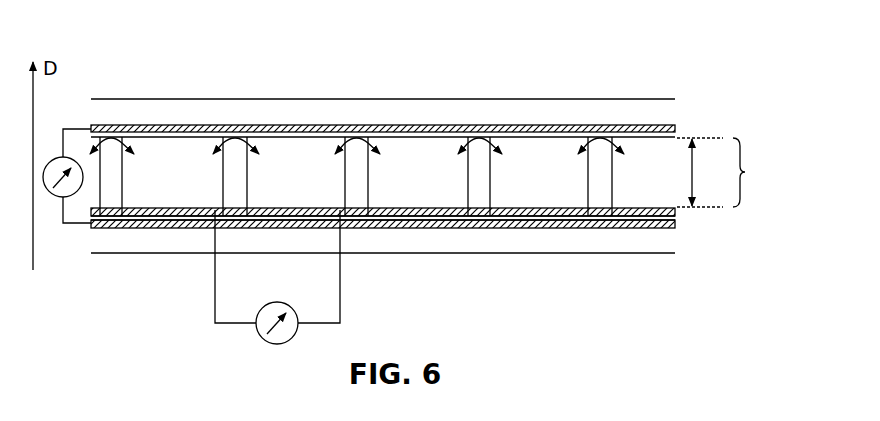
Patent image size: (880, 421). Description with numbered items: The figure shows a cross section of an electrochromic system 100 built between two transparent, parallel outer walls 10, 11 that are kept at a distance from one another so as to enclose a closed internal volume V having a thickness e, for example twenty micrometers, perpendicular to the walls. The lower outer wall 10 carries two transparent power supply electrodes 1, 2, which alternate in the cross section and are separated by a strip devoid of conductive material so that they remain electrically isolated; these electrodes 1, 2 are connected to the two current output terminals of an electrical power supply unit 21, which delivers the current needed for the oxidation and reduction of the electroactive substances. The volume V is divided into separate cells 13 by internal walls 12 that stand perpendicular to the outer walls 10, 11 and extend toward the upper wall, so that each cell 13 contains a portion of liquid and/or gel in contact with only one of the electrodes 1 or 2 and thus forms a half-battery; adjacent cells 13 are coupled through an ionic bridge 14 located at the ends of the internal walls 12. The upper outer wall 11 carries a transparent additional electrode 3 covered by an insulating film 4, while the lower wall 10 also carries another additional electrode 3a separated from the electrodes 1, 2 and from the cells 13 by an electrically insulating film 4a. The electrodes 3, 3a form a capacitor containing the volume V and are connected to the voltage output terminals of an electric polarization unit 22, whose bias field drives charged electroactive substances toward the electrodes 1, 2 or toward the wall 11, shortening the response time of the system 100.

The electrochromic system 100 is at (668, 68).
The outer wall 10 is at (663, 238).
The outer wall 11 is at (668, 115).
The additional electrode 3 is at (170, 127).
The insulating film 4 is at (132, 136).
The other additional electrode 3a is at (100, 226).
The electrically insulating film 4a is at (140, 218).
The transparent electrode 1 is at (173, 212).
The transparent electrode 2 is at (287, 212).
The cell 13 is at (163, 185).
The internal wall 12 is at (356, 157).
The ionic bridge 14 is at (220, 150).
The thickness e is at (700, 172).
The internal volume V is at (747, 172).
The electrical power supply unit 21 is at (259, 338).
The electric polarization unit 22 is at (54, 197).